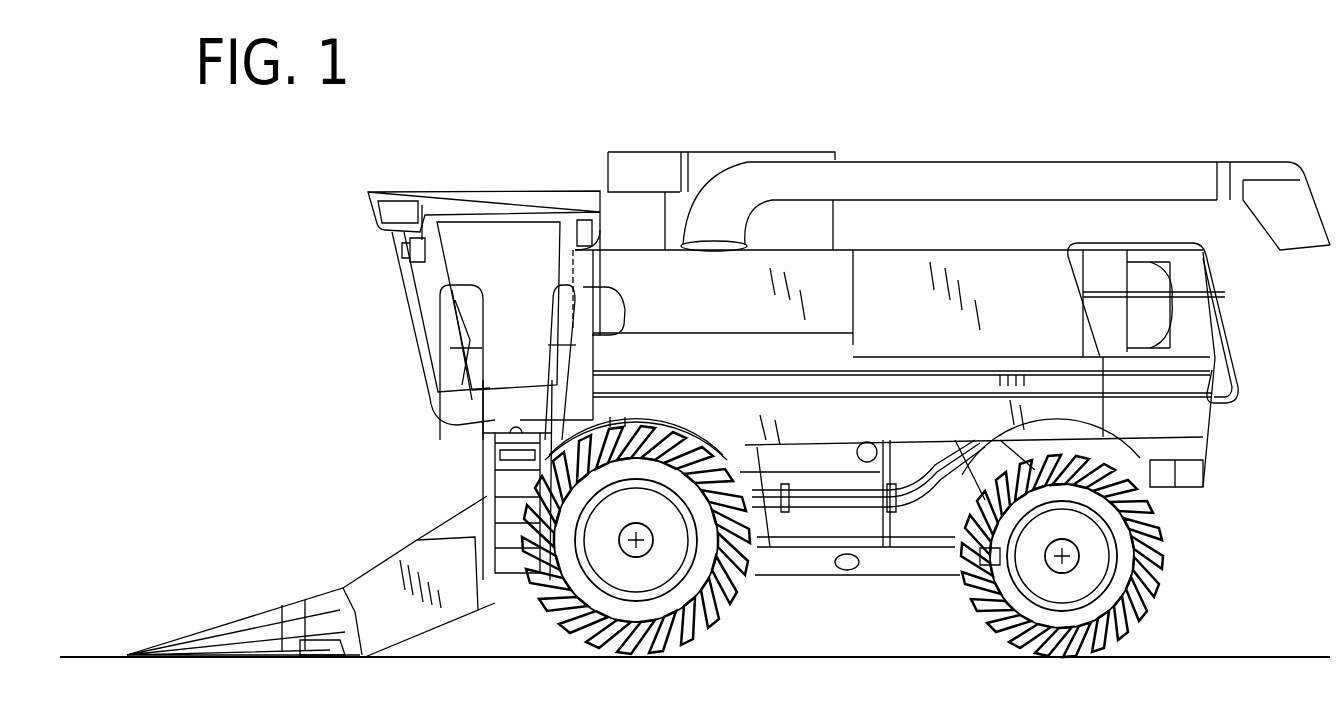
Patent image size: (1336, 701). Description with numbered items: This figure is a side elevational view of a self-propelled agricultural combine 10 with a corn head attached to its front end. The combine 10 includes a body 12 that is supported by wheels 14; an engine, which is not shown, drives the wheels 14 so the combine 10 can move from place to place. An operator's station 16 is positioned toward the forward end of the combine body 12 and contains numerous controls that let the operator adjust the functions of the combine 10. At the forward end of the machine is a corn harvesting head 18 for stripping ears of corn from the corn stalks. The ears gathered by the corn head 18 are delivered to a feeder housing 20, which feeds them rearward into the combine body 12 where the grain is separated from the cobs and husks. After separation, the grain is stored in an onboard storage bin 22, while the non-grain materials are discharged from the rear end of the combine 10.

The self-propelled agricultural combine 10 is at (581, 158).
The body 12 is at (672, 290).
The wheels 14 is at (738, 601).
The operator's station 16 is at (410, 313).
The corn harvesting head 18 is at (280, 583).
The feeder housing 20 is at (440, 524).
The onboard storage bin 22 is at (693, 148).